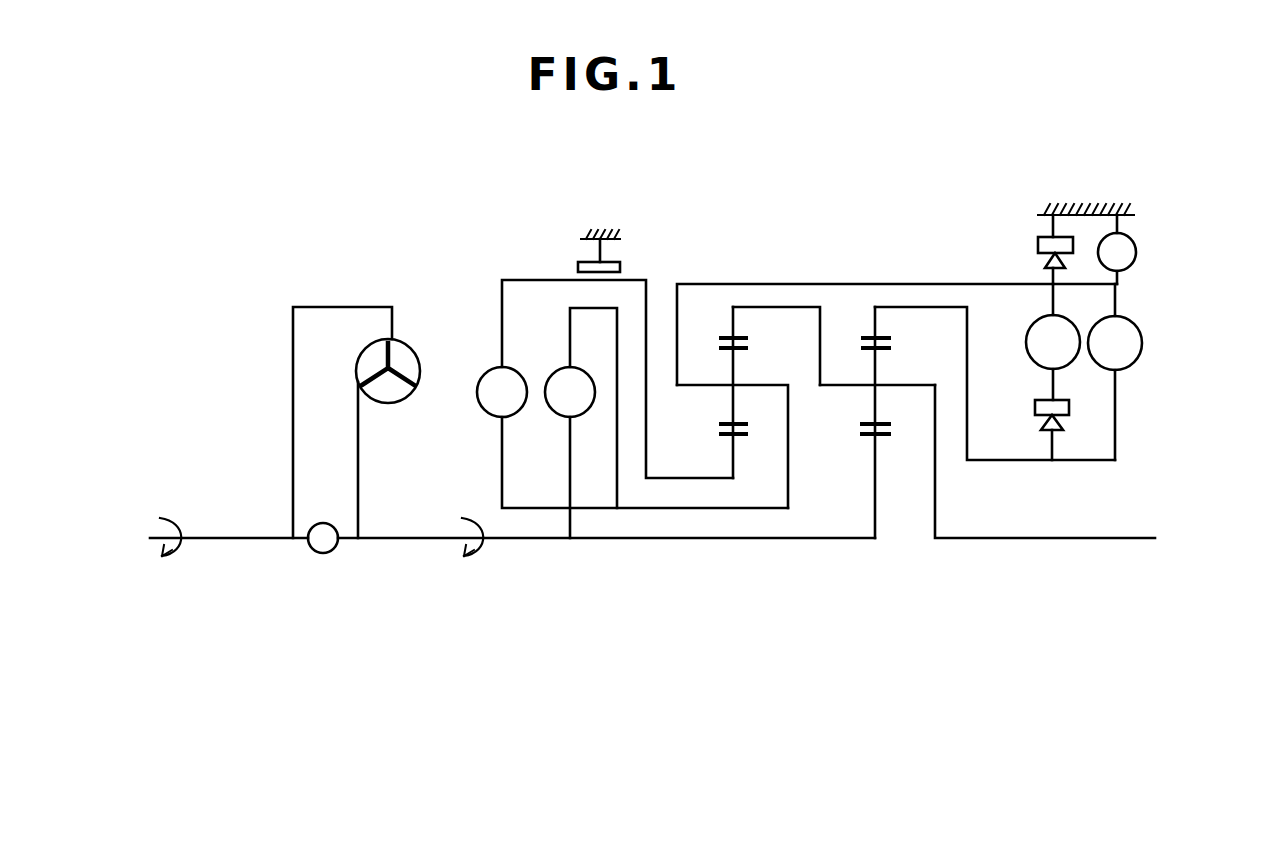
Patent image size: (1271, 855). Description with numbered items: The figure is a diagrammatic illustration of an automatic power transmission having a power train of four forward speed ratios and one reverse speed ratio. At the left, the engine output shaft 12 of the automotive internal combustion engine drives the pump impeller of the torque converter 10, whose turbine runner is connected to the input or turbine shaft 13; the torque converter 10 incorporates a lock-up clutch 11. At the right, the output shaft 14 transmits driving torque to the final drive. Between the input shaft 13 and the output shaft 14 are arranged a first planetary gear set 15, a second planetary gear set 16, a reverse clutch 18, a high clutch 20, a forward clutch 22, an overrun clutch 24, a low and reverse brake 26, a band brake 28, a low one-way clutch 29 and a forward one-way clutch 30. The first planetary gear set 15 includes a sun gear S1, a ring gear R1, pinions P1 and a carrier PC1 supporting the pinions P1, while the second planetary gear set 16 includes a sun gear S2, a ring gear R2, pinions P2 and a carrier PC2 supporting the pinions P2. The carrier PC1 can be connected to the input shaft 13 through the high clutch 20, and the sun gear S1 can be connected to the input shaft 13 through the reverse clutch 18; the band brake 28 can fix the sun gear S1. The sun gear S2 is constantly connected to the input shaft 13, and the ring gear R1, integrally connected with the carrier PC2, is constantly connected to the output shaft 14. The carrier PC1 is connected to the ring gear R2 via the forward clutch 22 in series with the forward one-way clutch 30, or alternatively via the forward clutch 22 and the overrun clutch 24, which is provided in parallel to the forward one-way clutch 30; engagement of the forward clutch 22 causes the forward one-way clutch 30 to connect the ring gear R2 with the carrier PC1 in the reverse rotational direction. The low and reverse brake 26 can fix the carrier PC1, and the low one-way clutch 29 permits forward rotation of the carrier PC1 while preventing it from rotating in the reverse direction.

The torque converter 10 is at (416, 331).
The lock-up clutch 11 is at (329, 553).
The engine output shaft 12 is at (248, 537).
The input shaft 13 is at (424, 542).
The output shaft 14 is at (988, 538).
The first planetary gear set 15 is at (732, 297).
The second planetary gear set 16 is at (889, 297).
The reverse clutch 18 is at (480, 410).
The high clutch 20 is at (556, 418).
The forward clutch 22 is at (1028, 354).
The overrun clutch 24 is at (1143, 340).
The low and reverse brake 26 is at (1137, 250).
The band brake 28 is at (603, 251).
The low one-way clutch 29 is at (1037, 243).
The forward one-way clutch 30 is at (1035, 408).
The ring gear R1 is at (737, 317).
The carrier PC1 is at (763, 383).
The pinions P1 is at (731, 413).
The sun gear S1 is at (735, 468).
The ring gear R2 is at (880, 318).
The carrier PC2 is at (906, 384).
The pinions P2 is at (873, 411).
The sun gear S2 is at (875, 516).